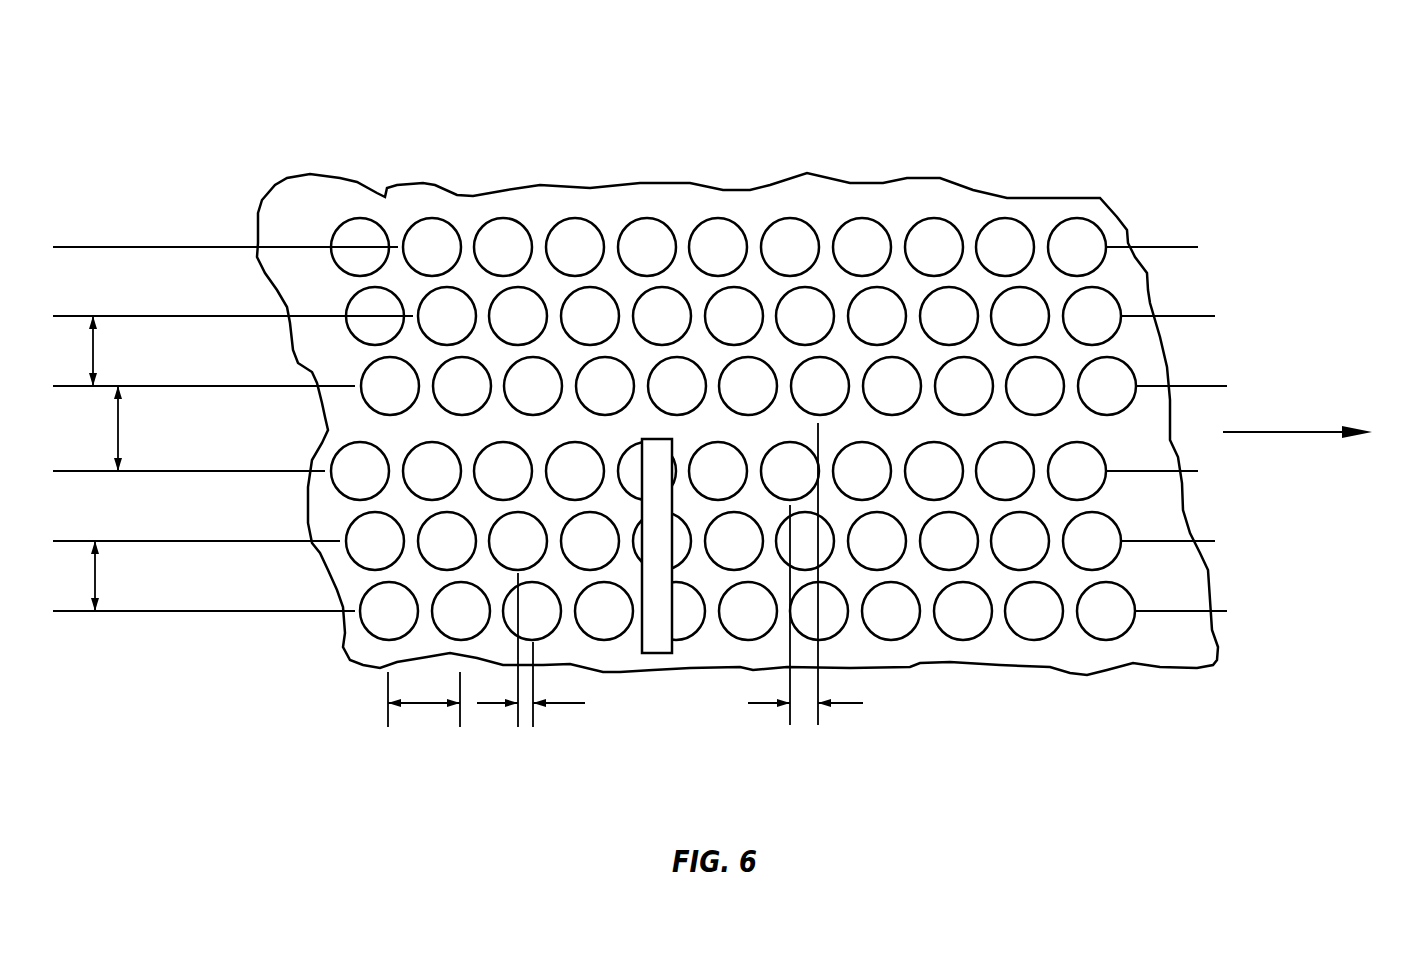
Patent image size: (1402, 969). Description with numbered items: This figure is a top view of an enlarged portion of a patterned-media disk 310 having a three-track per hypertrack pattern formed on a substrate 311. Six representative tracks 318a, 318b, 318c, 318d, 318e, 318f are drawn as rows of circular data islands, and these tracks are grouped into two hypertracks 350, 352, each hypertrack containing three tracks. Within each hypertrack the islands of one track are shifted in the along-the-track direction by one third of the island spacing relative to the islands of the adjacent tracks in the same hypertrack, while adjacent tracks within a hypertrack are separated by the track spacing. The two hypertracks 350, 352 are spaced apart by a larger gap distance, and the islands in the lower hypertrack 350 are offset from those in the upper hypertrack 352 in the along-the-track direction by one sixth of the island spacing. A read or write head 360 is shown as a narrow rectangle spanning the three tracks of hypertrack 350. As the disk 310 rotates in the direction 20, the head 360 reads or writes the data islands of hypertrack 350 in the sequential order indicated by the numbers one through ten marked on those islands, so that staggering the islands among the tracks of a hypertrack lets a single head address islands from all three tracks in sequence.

The disk 310 is at (318, 115).
The substrate 311 is at (610, 205).
The track 318a is at (214, 610).
The track 318b is at (214, 540).
The track 318c is at (257, 470).
The track 318d is at (214, 385).
The track 318e is at (213, 315).
The track 318f is at (216, 246).
The hypertrack 350 is at (1240, 465).
The hypertrack 352 is at (1240, 235).
The read or write head 360 is at (655, 653).
The direction 20 is at (1287, 432).